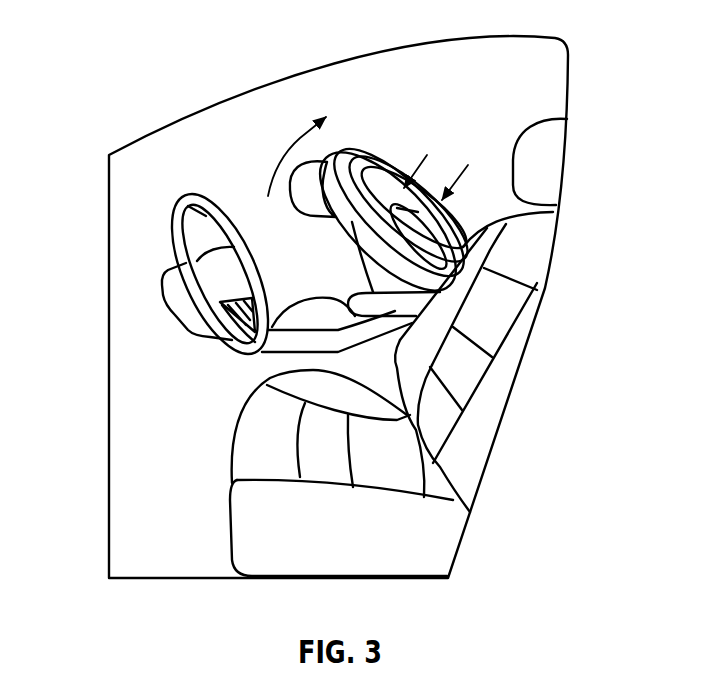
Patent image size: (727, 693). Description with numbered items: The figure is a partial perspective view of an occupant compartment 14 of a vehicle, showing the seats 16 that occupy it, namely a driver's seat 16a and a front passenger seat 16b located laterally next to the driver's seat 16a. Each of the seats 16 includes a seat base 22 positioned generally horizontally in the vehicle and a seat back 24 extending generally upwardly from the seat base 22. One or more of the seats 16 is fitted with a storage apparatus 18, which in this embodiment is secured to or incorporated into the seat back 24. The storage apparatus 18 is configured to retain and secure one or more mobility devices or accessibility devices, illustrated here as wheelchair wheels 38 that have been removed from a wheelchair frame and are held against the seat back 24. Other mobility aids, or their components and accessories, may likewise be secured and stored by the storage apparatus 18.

The occupant compartment 14 is at (157, 143).
The seat 16 is at (537, 246).
The driver's seat 16a is at (540, 145).
The front passenger seat 16b is at (303, 182).
The storage apparatus 18 is at (533, 288).
The seat base 22 is at (295, 313).
The seat back 24 is at (373, 253).
The wheelchair wheel 38 is at (400, 168).